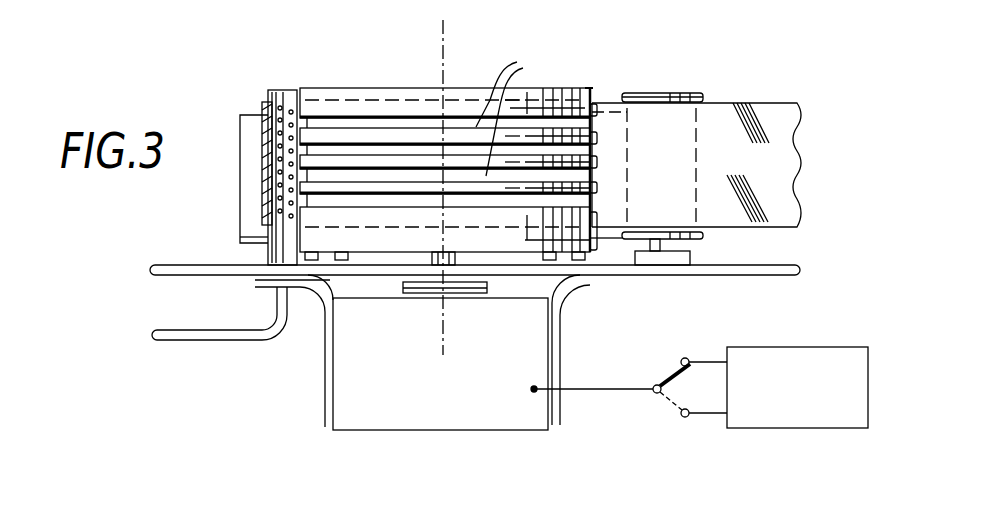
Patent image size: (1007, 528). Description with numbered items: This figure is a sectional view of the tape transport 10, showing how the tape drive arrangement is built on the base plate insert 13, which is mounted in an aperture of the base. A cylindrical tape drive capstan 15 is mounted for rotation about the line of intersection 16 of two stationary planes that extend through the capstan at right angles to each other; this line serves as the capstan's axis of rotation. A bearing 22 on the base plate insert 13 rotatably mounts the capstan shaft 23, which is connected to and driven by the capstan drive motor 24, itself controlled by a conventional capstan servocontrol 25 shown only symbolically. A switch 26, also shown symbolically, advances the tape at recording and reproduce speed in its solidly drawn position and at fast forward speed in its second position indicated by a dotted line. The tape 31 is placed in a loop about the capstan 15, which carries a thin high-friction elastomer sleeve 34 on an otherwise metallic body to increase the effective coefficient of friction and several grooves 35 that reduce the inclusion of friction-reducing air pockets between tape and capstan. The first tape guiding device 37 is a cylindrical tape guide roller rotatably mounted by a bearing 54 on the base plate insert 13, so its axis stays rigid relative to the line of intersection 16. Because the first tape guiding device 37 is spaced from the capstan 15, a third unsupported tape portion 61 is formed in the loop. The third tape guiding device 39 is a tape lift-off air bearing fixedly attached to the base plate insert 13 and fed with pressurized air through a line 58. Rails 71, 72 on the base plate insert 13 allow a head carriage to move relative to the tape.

The apparatus 10 is at (148, 270).
The base plate insert 13 is at (181, 278).
The tape drive capstan 15 is at (392, 88).
The line of intersection 16 is at (452, 57).
The bearing 22 is at (472, 293).
The capstan shaft 23 is at (430, 260).
The capstan drive motor 24 is at (402, 422).
The capstan servocontrol 25 is at (815, 428).
The switch 26 is at (670, 376).
The tape 31 is at (768, 118).
The elastomer sleeve 34 is at (593, 88).
The grooves 35 is at (513, 114).
The first tape guiding device 37 is at (692, 70).
The third tape guiding device 39 is at (278, 90).
The bearing 54 is at (690, 262).
The line 58 is at (190, 341).
The third unsupported tape portion 61 is at (628, 171).
The rail 71 is at (318, 296).
The rail 72 is at (576, 288).